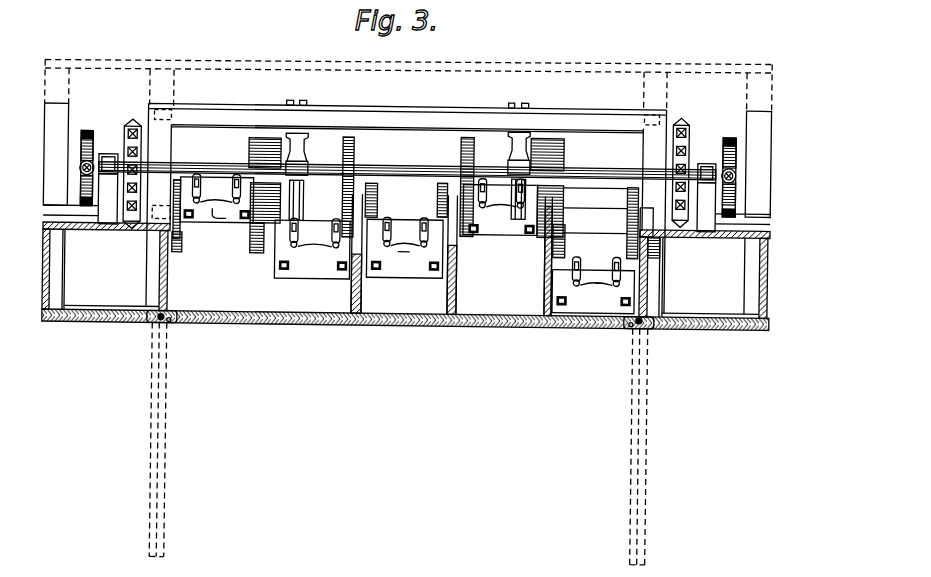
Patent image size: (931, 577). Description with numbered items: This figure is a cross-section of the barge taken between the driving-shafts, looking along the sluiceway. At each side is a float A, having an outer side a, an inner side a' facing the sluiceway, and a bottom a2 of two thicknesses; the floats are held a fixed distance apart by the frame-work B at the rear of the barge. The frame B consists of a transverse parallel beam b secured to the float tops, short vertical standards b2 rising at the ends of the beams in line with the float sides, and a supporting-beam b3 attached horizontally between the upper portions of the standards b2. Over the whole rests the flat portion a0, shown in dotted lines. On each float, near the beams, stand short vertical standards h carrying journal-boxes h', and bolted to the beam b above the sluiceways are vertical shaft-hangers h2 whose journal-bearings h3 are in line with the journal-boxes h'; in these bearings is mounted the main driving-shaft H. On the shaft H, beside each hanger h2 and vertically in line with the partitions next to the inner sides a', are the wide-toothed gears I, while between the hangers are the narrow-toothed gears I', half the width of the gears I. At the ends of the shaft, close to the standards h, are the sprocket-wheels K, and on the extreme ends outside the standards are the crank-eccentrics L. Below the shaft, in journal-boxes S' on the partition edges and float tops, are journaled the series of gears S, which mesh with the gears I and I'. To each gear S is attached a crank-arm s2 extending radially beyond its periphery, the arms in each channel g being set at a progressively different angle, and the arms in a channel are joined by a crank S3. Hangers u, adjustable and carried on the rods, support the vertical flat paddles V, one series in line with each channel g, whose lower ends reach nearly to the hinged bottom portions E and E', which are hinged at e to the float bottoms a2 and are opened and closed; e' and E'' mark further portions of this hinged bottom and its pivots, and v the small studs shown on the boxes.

The flat portion a0 is at (408, 82).
The frame-work B is at (406, 193).
The supporting-beam b3 is at (407, 169).
The short vertical standards b2 is at (47, 137).
The crank-eccentrics L is at (85, 130).
The sprocket-wheels K is at (131, 118).
The journal-boxes h' is at (408, 157).
The short vertical standards h is at (407, 203).
The main driving-shaft H is at (395, 161).
The gear I is at (401, 196).
The vertical shaft-hangers h2 is at (302, 146).
The gear I' is at (408, 187).
The series of gears S is at (417, 224).
The journal-boxes S' is at (406, 212).
The paddles V is at (407, 245).
The crank S3 is at (406, 230).
The hangers u is at (228, 208).
The stud v is at (592, 292).
The journal-bearings h3 is at (316, 195).
The crank-arm s2 is at (331, 216).
The parallel beam b is at (595, 211).
The channels g is at (393, 254).
The float A is at (777, 248).
The outer side a is at (399, 274).
The inner side a' is at (412, 273).
The bottom a2 is at (118, 323).
The pivot e' is at (168, 334).
The hinges e is at (623, 338).
The hinged bottom portion E' is at (174, 439).
The hinged bottom portion E is at (558, 446).
The leg bracket E'' is at (260, 340).